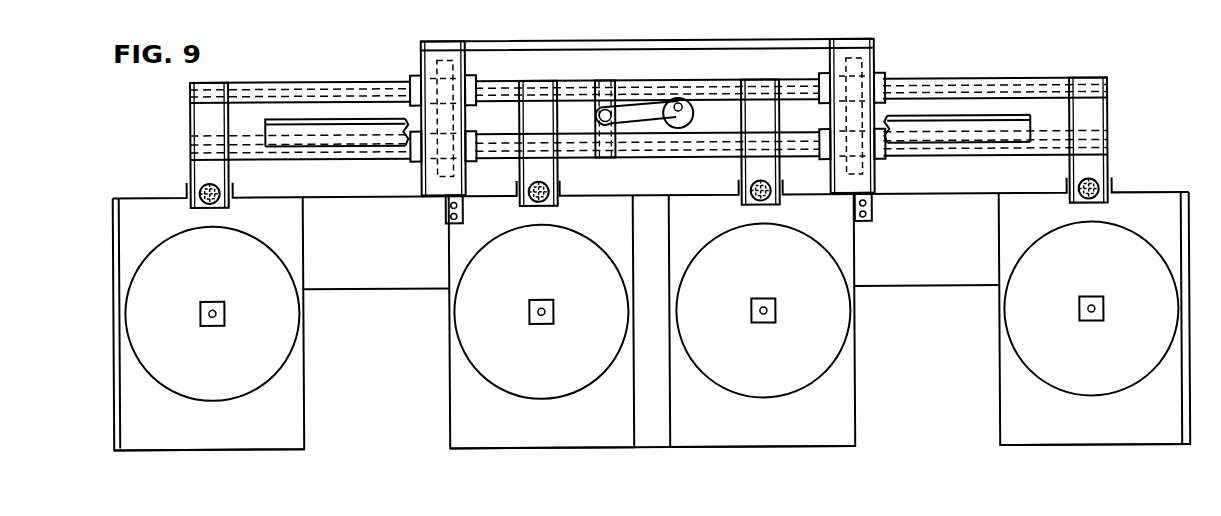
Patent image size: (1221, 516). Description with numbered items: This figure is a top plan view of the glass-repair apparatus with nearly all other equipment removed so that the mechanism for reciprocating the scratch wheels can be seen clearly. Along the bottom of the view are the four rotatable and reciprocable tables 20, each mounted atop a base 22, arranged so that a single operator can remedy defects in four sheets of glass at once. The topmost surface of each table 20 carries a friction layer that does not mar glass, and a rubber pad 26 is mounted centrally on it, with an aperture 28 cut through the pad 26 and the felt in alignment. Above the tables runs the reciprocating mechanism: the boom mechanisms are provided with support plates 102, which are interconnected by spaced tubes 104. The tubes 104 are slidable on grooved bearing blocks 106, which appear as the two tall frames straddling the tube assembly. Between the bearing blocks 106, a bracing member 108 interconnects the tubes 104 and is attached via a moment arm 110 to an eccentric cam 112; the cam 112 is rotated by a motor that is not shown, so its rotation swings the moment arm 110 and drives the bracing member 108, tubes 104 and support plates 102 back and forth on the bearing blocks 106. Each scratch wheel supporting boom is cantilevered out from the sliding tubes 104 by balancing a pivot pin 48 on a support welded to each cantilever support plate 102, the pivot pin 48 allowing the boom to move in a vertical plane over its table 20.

The rotatable and reciprocable table 20 is at (448, 322).
The base 22 is at (450, 421).
The rubber pad 26 is at (202, 304).
The aperture 28 is at (213, 309).
The pivot pin 48 is at (219, 192).
The support plate 102 is at (199, 126).
The spaced tube 104 is at (238, 138).
The grooved bearing block 106 is at (418, 78).
The bracing member 108 is at (596, 127).
The moment arm 110 is at (628, 114).
The eccentric cam 112 is at (684, 108).